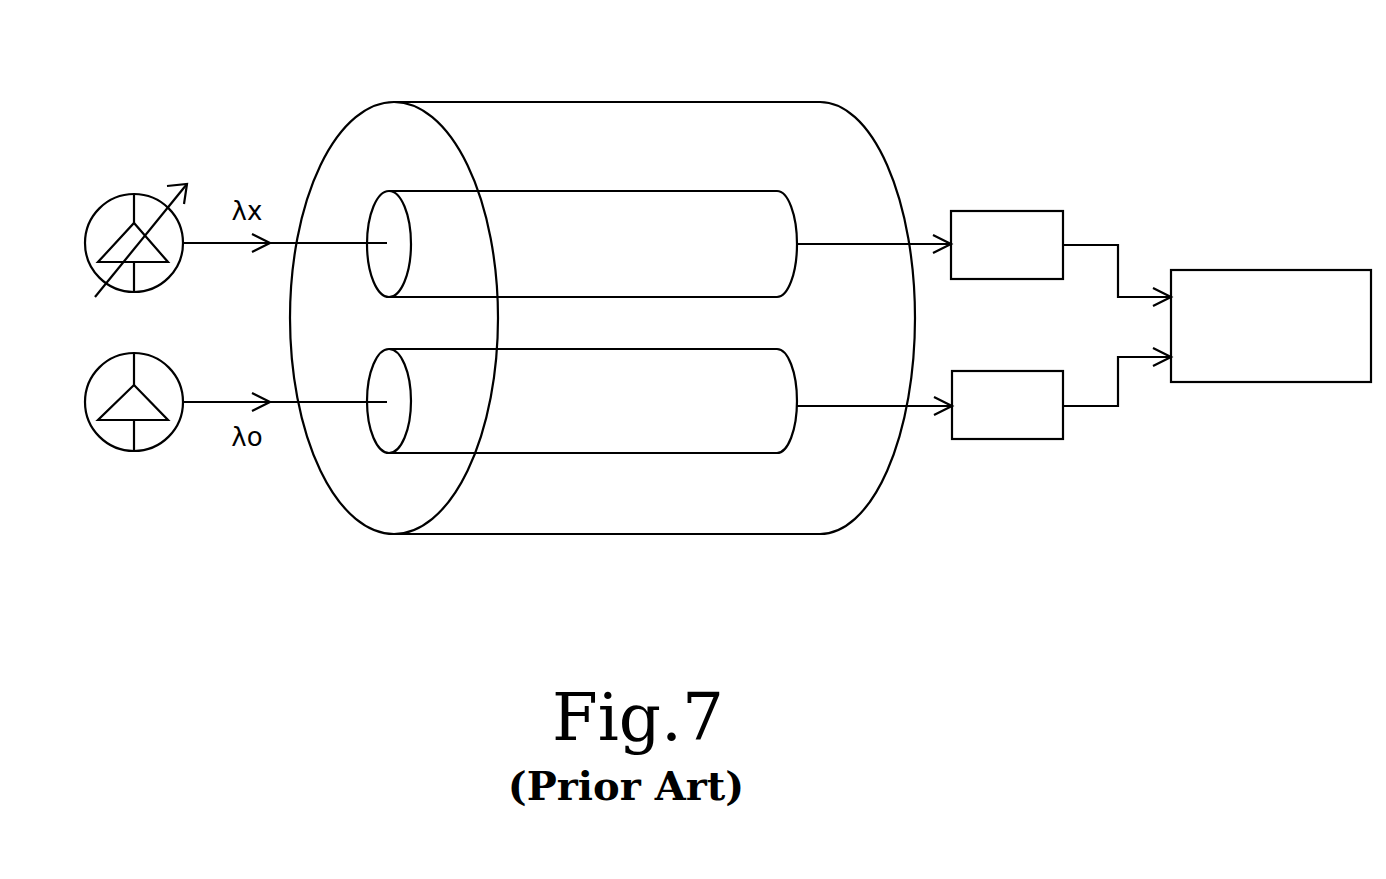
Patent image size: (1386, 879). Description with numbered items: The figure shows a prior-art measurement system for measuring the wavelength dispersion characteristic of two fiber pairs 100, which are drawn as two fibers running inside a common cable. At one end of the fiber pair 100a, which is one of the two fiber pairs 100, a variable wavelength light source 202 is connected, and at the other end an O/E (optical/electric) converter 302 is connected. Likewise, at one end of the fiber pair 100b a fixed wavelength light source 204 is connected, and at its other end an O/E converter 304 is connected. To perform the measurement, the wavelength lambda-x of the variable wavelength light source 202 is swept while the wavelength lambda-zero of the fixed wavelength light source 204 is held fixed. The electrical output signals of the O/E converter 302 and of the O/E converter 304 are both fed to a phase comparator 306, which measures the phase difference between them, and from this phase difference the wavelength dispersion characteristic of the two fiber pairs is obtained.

The two fiber pairs 100 is at (862, 133).
The fiber pair 100a is at (793, 214).
The fiber pair 100b is at (794, 376).
The variable wavelength light source 202 is at (114, 196).
The fixed wavelength light source 204 is at (108, 445).
The O/E converter 302 is at (1003, 210).
The O/E converter 304 is at (1004, 440).
The phase comparator 306 is at (1245, 383).